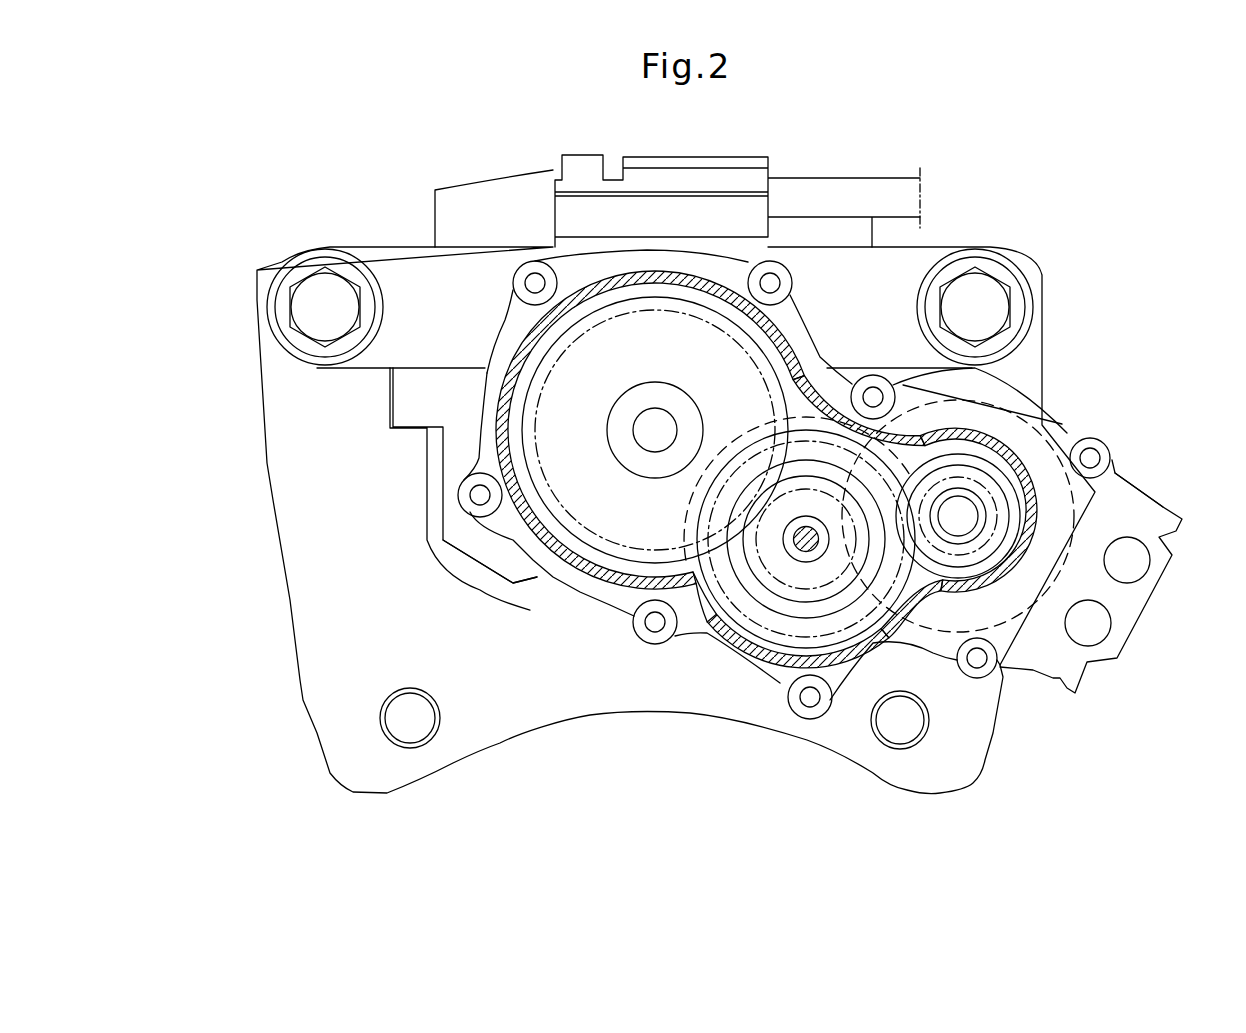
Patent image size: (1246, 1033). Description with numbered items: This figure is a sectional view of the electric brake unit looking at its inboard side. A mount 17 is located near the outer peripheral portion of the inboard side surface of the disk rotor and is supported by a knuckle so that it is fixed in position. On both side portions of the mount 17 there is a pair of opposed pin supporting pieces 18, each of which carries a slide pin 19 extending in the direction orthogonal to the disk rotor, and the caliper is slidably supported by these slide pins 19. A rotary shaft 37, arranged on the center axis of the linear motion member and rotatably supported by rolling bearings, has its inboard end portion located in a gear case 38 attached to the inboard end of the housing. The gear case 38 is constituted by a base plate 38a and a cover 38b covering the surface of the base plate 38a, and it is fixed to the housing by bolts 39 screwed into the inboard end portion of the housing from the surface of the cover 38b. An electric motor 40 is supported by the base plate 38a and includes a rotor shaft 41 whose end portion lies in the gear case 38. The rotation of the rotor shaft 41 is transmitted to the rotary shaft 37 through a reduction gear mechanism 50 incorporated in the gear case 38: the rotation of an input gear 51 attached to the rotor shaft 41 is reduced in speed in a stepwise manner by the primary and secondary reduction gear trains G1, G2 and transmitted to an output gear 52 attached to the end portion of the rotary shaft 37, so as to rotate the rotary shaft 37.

The mount 17 is at (262, 443).
The pin supporting pieces 18 is at (270, 375).
The slide pin 19 is at (327, 287).
The rotary shaft 37 is at (656, 420).
The gear case 38 is at (498, 337).
The base plate 38a is at (487, 433).
The cover 38b is at (523, 557).
The bolts 39 is at (655, 628).
The electric motor 40 is at (1015, 411).
The rotor shaft 41 is at (960, 515).
The reduction gear mechanism 50 is at (764, 346).
The input gear 51 is at (1007, 505).
The output gear 52 is at (630, 525).
The primary reduction gear train G1 is at (906, 481).
The secondary reduction gear train G2 is at (794, 422).